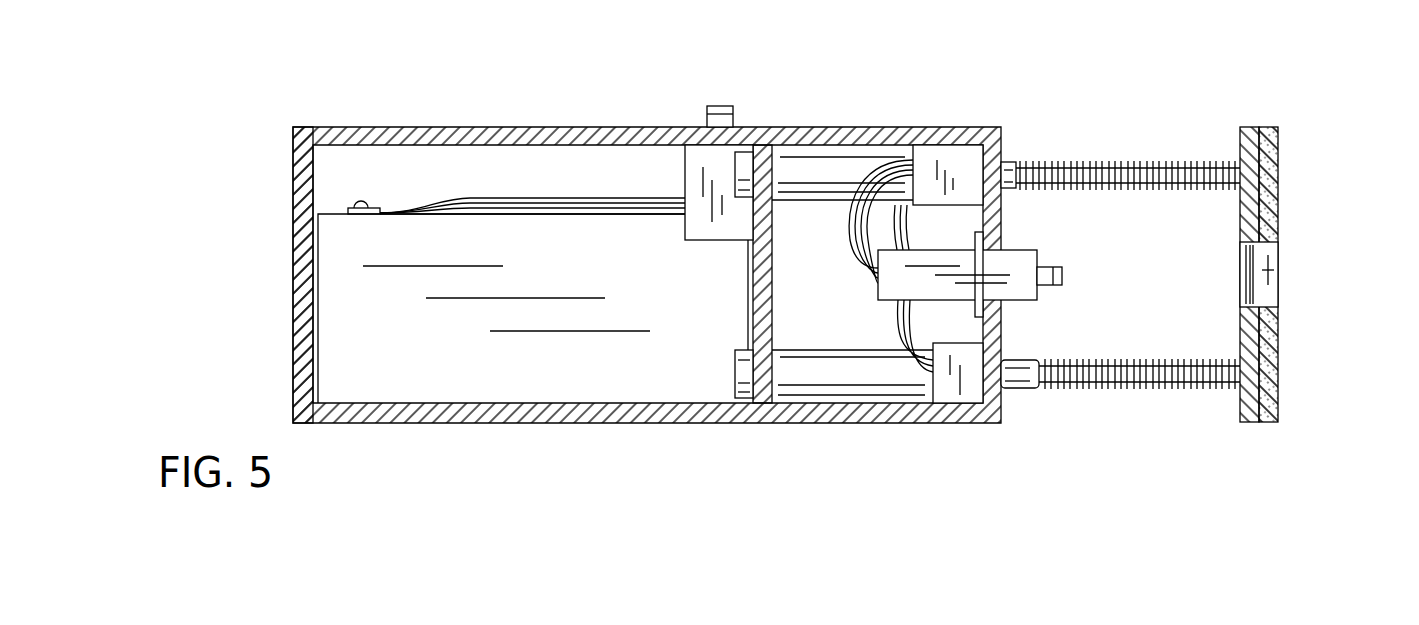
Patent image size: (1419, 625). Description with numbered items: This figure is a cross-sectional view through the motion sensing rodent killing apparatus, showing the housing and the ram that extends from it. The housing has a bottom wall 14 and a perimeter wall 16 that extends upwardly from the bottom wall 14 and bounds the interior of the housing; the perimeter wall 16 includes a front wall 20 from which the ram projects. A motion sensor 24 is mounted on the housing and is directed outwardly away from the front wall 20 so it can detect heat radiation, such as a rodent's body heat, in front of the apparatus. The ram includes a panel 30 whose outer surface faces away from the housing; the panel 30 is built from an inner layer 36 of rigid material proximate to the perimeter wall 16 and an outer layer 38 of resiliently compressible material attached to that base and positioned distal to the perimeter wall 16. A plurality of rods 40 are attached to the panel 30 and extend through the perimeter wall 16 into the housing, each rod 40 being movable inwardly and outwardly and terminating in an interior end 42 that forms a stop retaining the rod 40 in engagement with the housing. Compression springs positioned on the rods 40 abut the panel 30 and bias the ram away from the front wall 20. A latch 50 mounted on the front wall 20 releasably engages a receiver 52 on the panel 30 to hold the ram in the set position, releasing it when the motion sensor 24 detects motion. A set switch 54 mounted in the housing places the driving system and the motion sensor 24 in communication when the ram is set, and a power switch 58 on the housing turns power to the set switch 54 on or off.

The bottom wall 14 is at (518, 423).
The perimeter wall 16 is at (293, 323).
The front wall 20 is at (953, 251).
The motion sensor 24 is at (963, 390).
The panel 30 is at (1276, 254).
The inner layer 36 is at (1248, 422).
The outer layer 38 is at (1268, 422).
The rod 40 is at (1197, 165).
The interior end 42 is at (745, 160).
The latch 50 is at (1062, 278).
The receiver 52 is at (1250, 280).
The set switch 54 is at (947, 163).
The power switch 58 is at (717, 112).